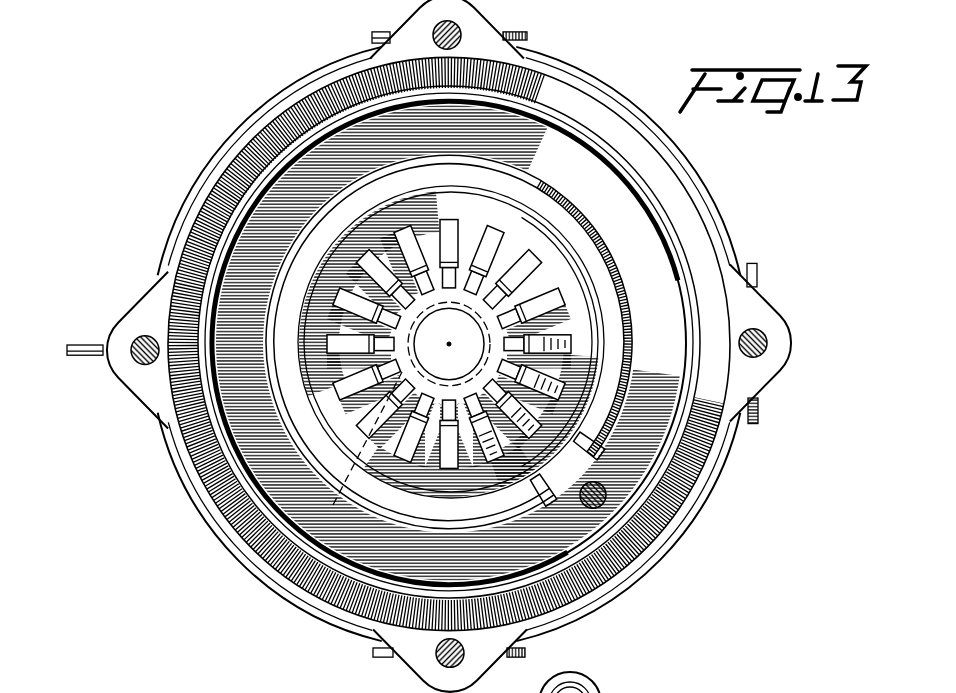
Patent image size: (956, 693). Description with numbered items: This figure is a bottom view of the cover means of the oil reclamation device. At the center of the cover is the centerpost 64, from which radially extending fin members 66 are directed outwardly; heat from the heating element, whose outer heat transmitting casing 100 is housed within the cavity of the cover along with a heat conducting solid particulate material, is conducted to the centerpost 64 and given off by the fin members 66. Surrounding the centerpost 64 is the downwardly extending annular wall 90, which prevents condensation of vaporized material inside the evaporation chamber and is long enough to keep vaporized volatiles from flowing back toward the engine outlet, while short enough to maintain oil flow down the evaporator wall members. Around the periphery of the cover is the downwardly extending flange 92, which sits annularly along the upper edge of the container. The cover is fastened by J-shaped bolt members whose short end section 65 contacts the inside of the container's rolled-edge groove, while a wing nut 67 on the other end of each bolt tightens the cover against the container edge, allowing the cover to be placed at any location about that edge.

The centerpost 64 is at (548, 272).
The short end section 65 is at (760, 338).
The fin members 66 is at (515, 302).
The wing nut 67 is at (527, 35).
The annular wall 90 is at (290, 277).
The flange 92 is at (260, 183).
The heat transmitting casing 100 is at (352, 447).